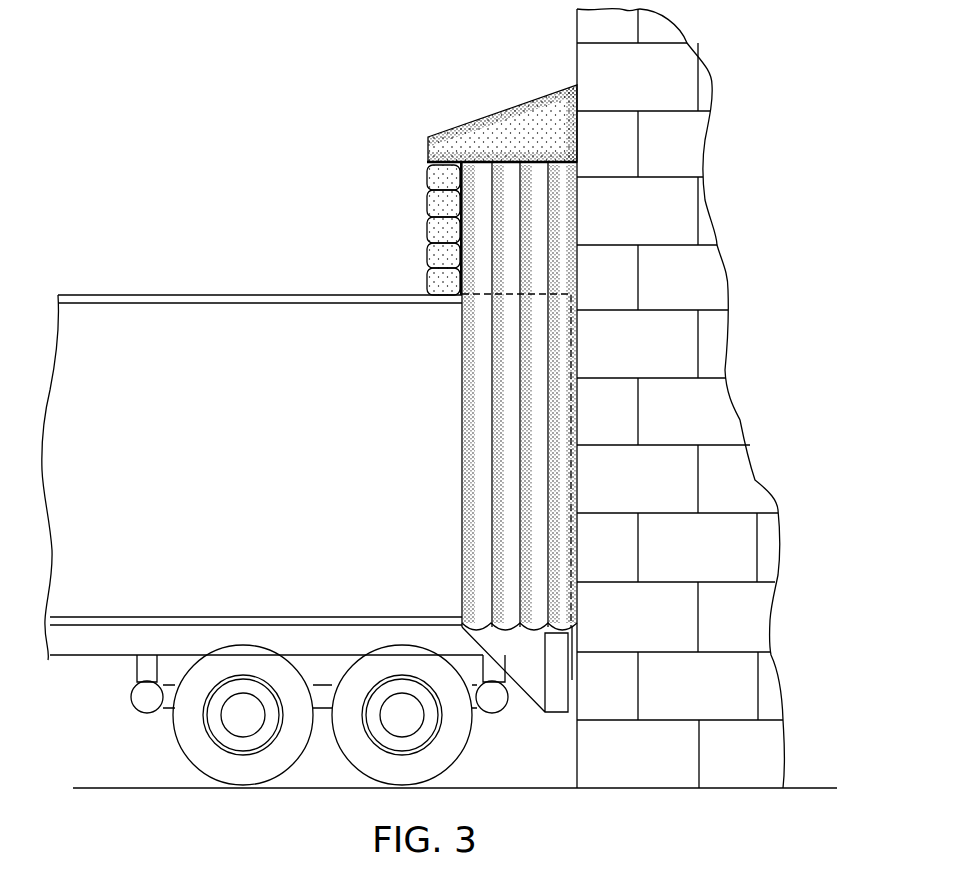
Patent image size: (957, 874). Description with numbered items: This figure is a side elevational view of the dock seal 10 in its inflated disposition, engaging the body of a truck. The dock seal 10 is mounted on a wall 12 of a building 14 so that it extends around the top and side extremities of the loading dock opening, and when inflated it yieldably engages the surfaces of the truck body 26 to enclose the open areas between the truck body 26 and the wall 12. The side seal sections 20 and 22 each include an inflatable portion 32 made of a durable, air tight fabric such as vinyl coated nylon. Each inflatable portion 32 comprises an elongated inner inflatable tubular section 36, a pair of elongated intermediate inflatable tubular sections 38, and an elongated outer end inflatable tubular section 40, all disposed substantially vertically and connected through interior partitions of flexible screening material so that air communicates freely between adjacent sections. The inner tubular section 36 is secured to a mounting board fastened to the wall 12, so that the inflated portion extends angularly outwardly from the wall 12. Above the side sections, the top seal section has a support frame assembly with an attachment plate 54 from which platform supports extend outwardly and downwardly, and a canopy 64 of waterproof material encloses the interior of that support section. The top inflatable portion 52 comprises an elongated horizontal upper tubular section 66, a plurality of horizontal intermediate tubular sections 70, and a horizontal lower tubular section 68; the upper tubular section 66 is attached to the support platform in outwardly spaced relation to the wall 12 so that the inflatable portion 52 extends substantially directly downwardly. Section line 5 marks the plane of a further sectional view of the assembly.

The section line 5- 5 is at (458, 143).
The dock seal 10 is at (313, 256).
The wall 12 is at (578, 750).
The building 14 is at (716, 683).
The side seal section 20 is at (632, 421).
The side seal section 22 is at (465, 125).
The truck body 26 is at (188, 326).
The inflatable portion 32 is at (510, 560).
The inner inflatable tubular section 36 is at (563, 460).
The intermediate inflatable tubular sections 38 is at (537, 422).
The outer end inflatable tubular section 40 is at (482, 357).
The inflatable portion 52 is at (399, 228).
The attachment plate 54 is at (515, 128).
The canopy 64 is at (553, 107).
The upper tubular section 66 is at (427, 177).
The lower tubular section 68 is at (424, 257).
The intermediate tubular sections 70 is at (427, 243).